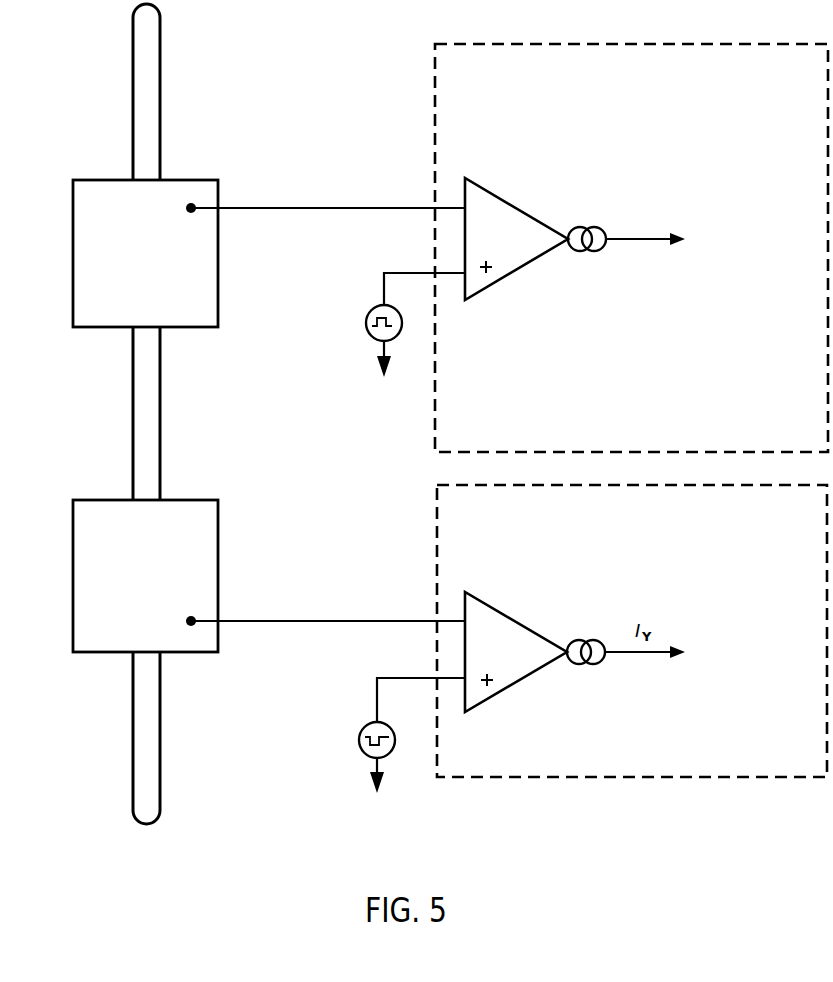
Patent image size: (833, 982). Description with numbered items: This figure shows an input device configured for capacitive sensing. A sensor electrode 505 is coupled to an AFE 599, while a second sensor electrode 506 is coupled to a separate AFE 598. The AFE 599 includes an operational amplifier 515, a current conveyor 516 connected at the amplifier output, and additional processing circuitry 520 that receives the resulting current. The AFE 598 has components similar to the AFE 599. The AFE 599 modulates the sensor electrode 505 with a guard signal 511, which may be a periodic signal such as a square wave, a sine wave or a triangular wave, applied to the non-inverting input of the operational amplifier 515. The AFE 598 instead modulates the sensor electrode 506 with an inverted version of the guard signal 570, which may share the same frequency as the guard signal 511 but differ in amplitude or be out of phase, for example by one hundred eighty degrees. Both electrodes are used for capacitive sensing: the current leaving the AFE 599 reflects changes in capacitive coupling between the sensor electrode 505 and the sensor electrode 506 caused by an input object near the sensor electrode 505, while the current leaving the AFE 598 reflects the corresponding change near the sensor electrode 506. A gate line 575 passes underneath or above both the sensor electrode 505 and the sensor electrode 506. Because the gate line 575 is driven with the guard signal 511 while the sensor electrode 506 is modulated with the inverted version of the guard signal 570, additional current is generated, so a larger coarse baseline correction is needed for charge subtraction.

The sensor electrode 505 is at (129, 290).
The sensor electrode 506 is at (129, 615).
The guard signal 511 is at (387, 325).
The operational amplifier 515 is at (540, 262).
The current conveyor 516 is at (601, 226).
The additional processing circuitry 520 is at (698, 244).
The inverted version of the guard signal 570 is at (356, 735).
The gate line 575 is at (150, 836).
The AFE 598 is at (660, 570).
The AFE 599 is at (665, 147).